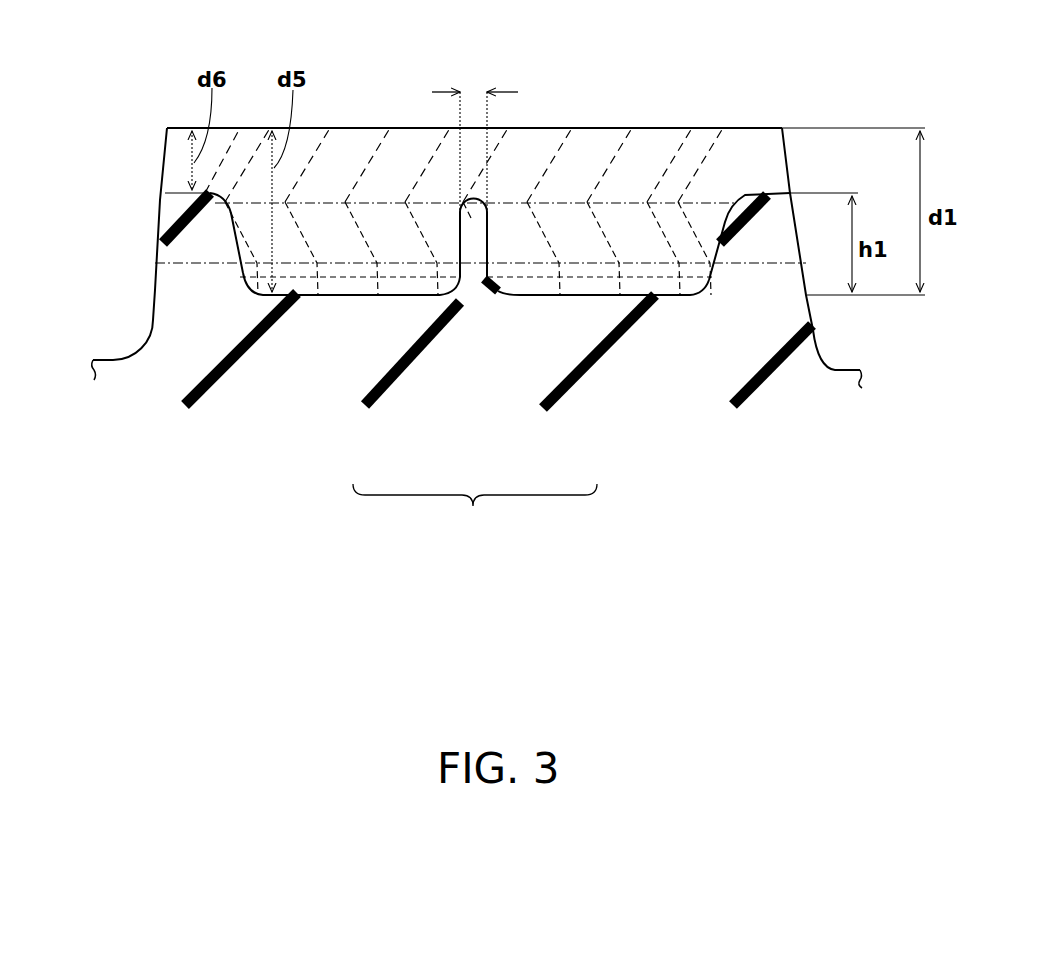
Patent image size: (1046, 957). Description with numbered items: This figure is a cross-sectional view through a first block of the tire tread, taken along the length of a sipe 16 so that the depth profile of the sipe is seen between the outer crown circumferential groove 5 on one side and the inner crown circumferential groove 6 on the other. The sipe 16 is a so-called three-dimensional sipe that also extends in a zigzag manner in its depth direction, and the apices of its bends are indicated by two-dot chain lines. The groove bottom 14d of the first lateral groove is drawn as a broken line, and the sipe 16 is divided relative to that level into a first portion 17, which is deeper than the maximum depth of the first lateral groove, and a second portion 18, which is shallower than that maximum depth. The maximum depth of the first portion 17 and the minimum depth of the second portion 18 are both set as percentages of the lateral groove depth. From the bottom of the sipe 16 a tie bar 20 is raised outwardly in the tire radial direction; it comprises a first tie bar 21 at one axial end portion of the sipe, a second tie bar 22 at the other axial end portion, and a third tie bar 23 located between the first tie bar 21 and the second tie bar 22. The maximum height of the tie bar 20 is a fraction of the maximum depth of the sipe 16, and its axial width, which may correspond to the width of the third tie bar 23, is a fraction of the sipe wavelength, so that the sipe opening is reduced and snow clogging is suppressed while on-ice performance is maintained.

The outer crown circumferential groove 5 is at (113, 316).
The inner crown circumferential groove 6 is at (840, 353).
The groove bottom 14d is at (184, 264).
The sipe 16 is at (390, 122).
The first portion 17 is at (346, 285).
The second portion 18 is at (181, 188).
The tie bar 20 is at (475, 511).
The first tie bar 21 is at (192, 241).
The second tie bar 22 is at (762, 237).
The third tie bar 23 is at (473, 245).